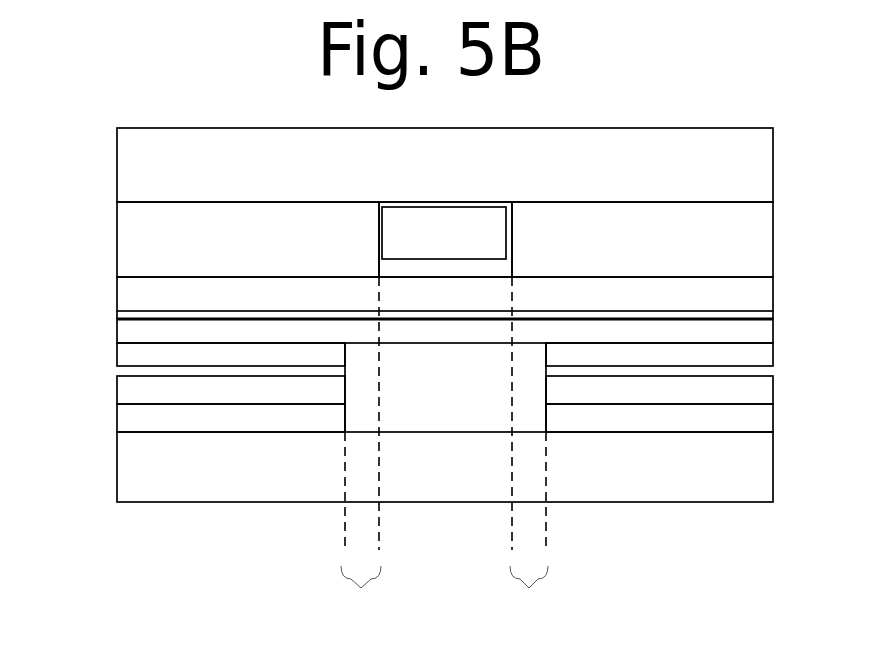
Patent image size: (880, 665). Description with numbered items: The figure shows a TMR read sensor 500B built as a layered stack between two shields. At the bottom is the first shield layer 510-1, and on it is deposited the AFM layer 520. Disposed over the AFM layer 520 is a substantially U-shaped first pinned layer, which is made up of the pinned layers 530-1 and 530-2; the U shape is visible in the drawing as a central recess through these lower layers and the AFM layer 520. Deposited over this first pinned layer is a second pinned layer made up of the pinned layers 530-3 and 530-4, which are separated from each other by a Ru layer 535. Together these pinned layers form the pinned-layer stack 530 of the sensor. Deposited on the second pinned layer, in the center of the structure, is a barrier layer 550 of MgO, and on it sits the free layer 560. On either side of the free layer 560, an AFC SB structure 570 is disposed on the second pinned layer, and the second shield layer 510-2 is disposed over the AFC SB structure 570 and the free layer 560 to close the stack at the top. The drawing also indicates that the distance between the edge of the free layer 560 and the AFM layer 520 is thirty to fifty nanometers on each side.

The TMR read sensor 500B is at (744, 76).
The first shield layer 510-1 is at (445, 422).
The second shield layer 510-2 is at (445, 165).
The AFM layer 520 is at (445, 419).
The pinned layers 530 is at (443, 264).
The pinned layer 530-1 is at (445, 391).
The pinned layer 530-2 is at (445, 355).
The pinned layer 530-3 is at (445, 331).
The pinned layer 530-4 is at (445, 294).
The Ru layer 535 is at (773, 315).
The barrier layer 550 is at (482, 267).
The free layer 560 is at (444, 233).
The AFC SB structure 570 is at (445, 239).